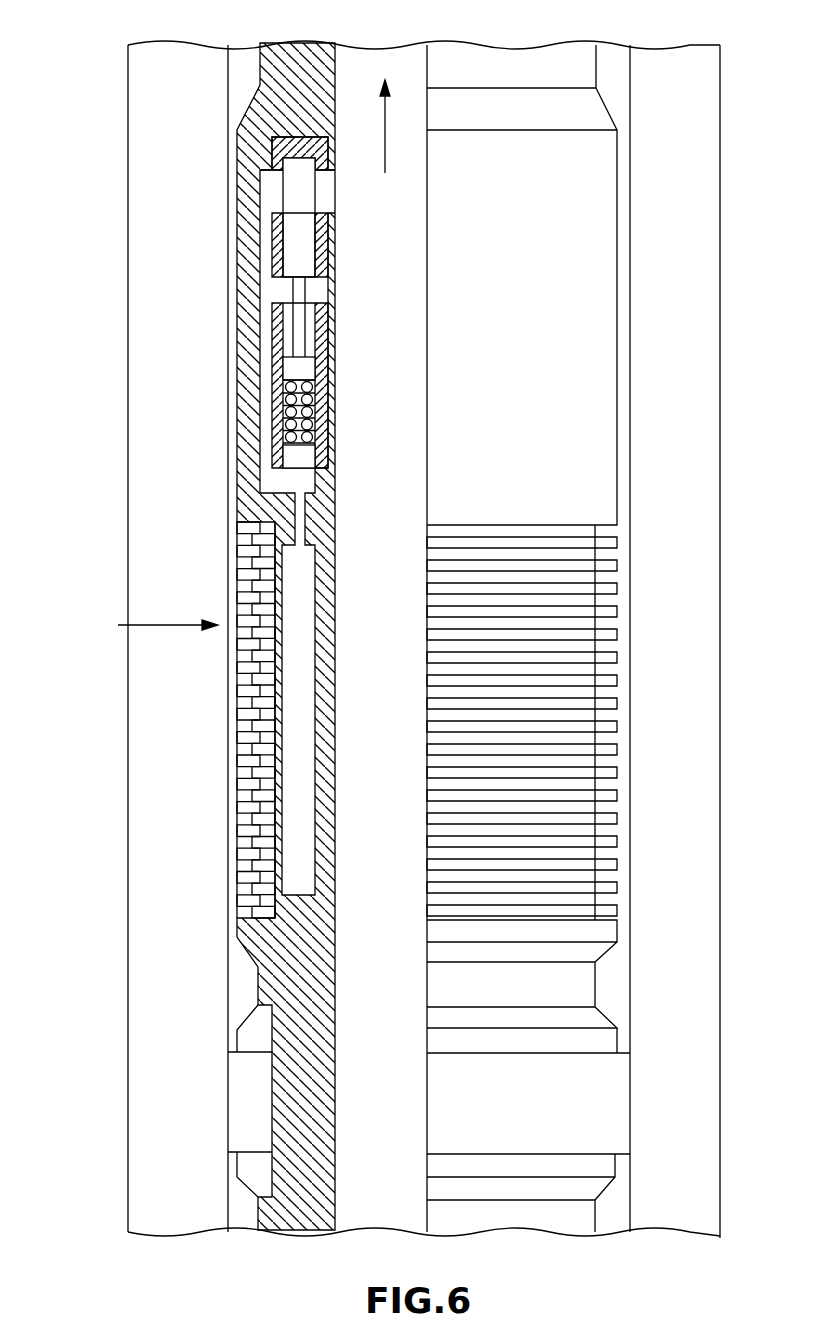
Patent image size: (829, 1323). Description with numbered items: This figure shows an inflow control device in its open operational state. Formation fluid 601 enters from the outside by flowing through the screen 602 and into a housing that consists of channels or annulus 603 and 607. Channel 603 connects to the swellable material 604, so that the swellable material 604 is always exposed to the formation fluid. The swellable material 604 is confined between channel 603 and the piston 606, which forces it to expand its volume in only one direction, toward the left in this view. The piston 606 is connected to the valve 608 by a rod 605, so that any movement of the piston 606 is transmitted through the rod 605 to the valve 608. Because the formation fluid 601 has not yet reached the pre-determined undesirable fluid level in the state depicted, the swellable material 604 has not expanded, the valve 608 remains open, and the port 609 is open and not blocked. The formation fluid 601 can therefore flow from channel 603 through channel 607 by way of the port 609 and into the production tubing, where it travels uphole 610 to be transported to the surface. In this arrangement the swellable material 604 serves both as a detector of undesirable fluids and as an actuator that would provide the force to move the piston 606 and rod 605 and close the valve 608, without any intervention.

The formation fluid 601 is at (168, 628).
The screen 602 is at (237, 893).
The channel 603 is at (300, 460).
The swellable material 604 is at (282, 408).
The rod 605 is at (300, 293).
The piston 606 is at (292, 370).
The channel 607 is at (268, 258).
The valve 608 is at (303, 226).
The port 609 is at (268, 192).
The uphole 610 is at (366, 66).